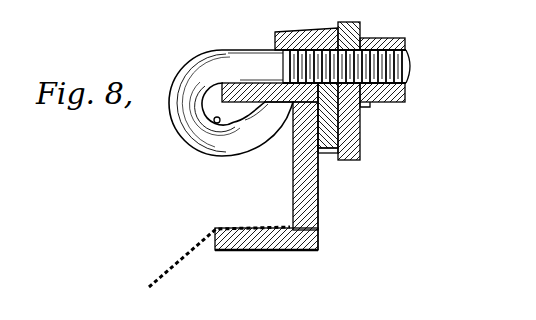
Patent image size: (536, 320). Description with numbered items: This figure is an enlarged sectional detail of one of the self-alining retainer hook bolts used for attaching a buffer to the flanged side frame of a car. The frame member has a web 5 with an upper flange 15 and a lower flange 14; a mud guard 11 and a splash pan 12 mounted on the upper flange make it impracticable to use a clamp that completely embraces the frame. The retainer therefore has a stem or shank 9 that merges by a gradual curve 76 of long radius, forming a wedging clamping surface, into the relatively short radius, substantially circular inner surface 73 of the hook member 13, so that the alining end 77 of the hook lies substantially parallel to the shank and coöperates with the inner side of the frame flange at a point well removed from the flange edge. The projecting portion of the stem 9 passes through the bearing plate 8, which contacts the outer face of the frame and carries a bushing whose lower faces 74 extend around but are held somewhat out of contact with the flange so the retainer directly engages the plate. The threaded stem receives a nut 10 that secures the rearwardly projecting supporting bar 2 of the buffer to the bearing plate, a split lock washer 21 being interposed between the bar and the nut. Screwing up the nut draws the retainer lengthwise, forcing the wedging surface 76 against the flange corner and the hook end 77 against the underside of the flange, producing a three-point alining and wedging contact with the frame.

The supporting bar 2 is at (360, 25).
The web 5 is at (318, 222).
The bearing plate 8 is at (328, 140).
The stem 9 is at (410, 62).
The nut 10 is at (405, 98).
The mud guard 11 is at (318, 28).
The splash pan 12 is at (149, 289).
The hook member 13 is at (183, 75).
The lower flange 14 is at (251, 244).
The upper flange 15 is at (221, 103).
The split lock washer 21 is at (368, 106).
The inner surface 73 is at (216, 122).
The lower faces 74 is at (277, 41).
The curve 76 is at (223, 74).
The alining end 77 is at (283, 113).